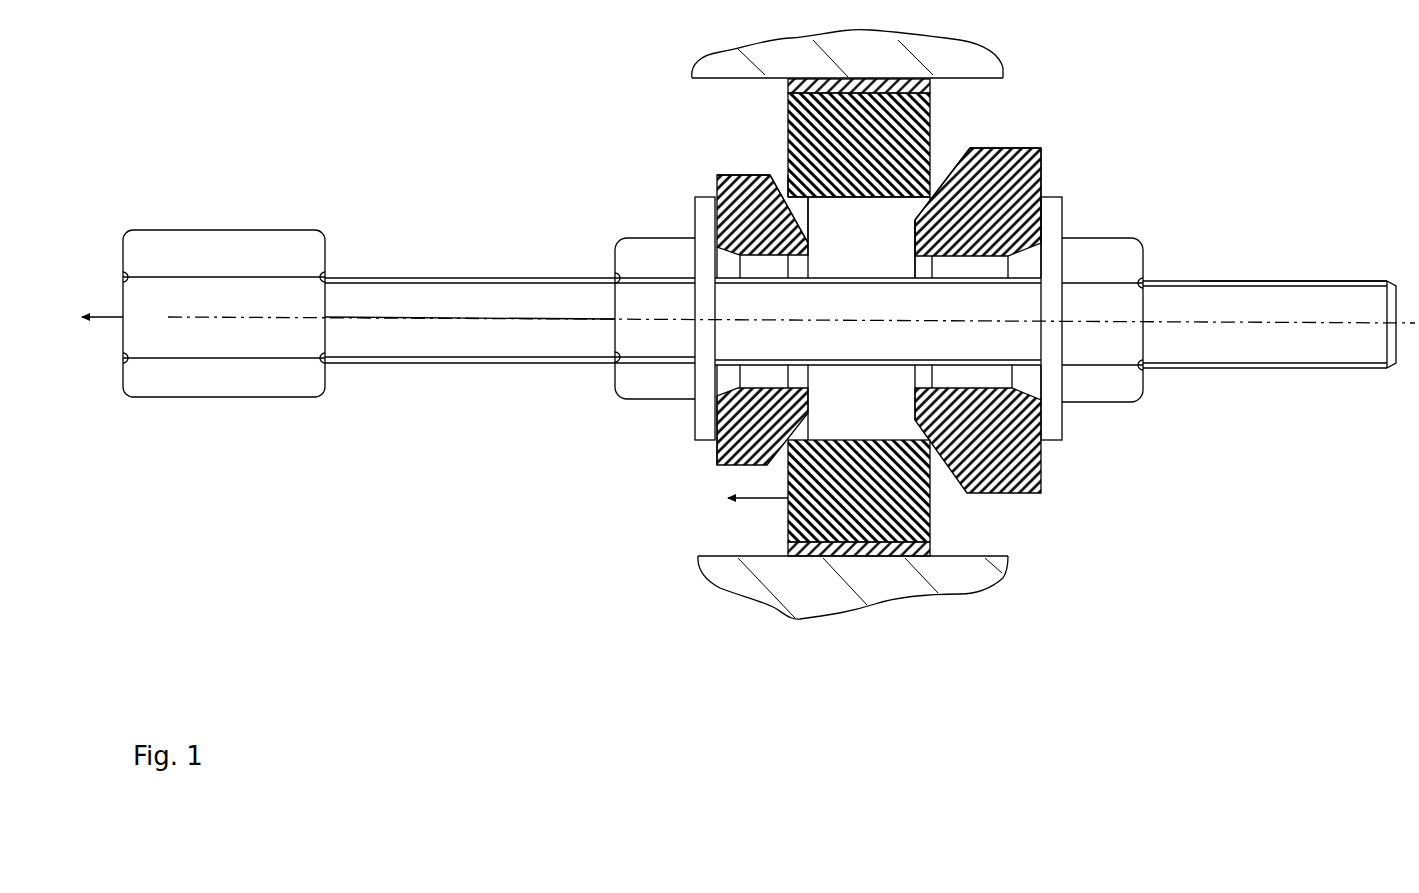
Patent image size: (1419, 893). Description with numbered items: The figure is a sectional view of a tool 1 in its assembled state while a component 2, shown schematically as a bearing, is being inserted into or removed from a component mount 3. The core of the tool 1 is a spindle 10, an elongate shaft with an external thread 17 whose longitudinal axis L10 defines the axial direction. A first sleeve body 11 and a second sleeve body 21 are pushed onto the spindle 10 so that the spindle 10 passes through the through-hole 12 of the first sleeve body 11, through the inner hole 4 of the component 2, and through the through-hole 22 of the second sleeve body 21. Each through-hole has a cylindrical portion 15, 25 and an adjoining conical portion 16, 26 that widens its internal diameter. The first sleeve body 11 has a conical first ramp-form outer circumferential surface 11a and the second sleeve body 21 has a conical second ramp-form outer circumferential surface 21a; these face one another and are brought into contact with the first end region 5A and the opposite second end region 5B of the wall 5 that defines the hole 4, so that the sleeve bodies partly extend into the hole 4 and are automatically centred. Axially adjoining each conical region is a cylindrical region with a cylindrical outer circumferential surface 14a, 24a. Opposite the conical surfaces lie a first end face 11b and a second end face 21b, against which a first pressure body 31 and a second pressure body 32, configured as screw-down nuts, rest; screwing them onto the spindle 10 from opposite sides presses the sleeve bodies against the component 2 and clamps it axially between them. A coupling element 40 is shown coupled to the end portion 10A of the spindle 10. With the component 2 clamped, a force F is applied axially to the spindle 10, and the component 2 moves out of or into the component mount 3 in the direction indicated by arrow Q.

The tool 1 is at (1332, 193).
The component 2 is at (934, 510).
The component mount 3 is at (692, 547).
The inner hole 4 is at (868, 407).
The wall 5 is at (873, 198).
The first end region 5A is at (916, 207).
The second end region 5B is at (800, 202).
The spindle 10 is at (1352, 357).
The end portion 10A is at (342, 374).
The first sleeve body 11 is at (1043, 155).
The first ramp-form outer circumferential surface 11a is at (946, 170).
The first end face 11b is at (1044, 177).
The through-hole 12 is at (1003, 268).
The outer circumferential surface 14a is at (1017, 146).
The cylindrical portion 15 is at (1000, 375).
The conical portion 16 is at (1017, 392).
The external thread 17 is at (1274, 280).
The second sleeve body 21 is at (717, 177).
The second ramp-form outer circumferential surface 21a is at (776, 177).
The second end face 21b is at (714, 450).
The through-hole 22 is at (762, 262).
The outer circumferential surface 24a is at (742, 172).
The cylindrical portion 25 is at (742, 373).
The conical portion 26 is at (742, 388).
The first pressure body 31 is at (1163, 268).
The second pressure body 32 is at (596, 246).
The coupling element 40 is at (235, 213).
The force F is at (96, 320).
The arrow Q is at (747, 498).
The longitudinal axis L10 is at (393, 318).